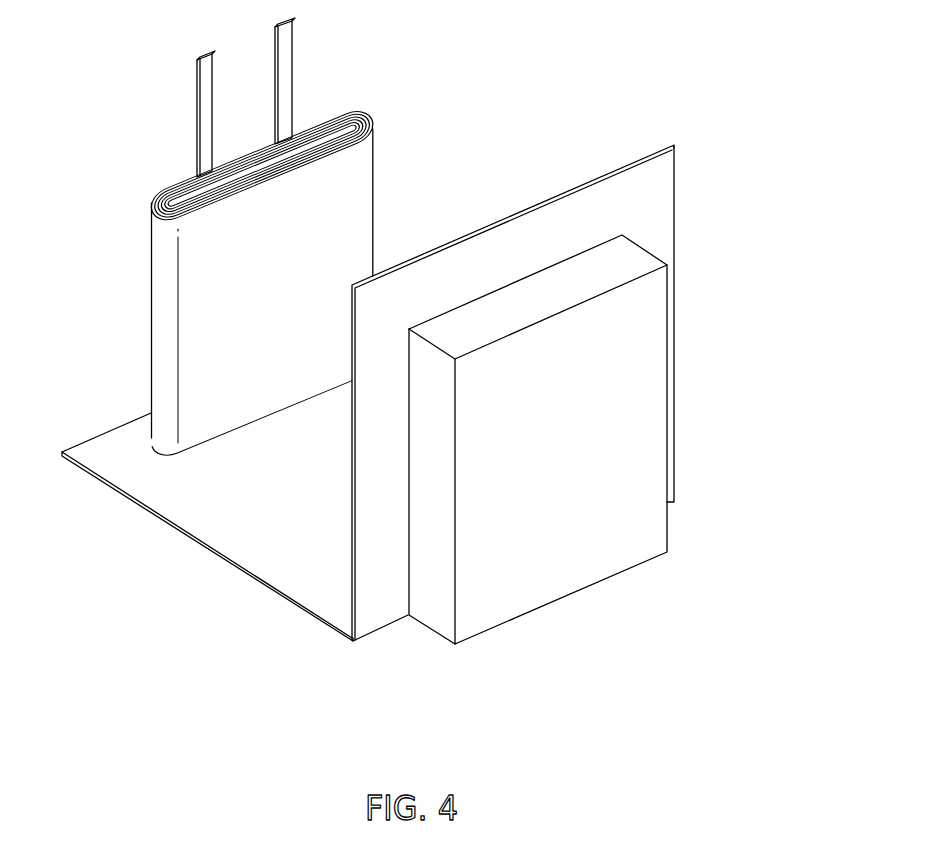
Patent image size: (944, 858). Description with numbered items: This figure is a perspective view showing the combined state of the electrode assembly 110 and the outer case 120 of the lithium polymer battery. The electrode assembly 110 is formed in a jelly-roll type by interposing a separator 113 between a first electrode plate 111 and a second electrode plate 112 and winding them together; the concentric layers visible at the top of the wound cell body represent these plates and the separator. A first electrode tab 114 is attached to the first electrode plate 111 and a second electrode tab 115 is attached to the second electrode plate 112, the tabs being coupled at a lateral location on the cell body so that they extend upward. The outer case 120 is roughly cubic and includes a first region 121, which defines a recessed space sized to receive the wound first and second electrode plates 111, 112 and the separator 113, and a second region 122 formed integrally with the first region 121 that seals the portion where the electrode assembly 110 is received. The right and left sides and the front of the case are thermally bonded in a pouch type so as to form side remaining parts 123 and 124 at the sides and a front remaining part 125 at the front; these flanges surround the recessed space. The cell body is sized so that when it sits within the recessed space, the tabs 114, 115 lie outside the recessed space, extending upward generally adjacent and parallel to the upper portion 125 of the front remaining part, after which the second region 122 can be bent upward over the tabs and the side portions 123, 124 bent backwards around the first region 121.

The electrode assembly 110 is at (390, 136).
The first electrode plate 111 is at (152, 200).
The second electrode plate 112 is at (164, 188).
The separator 113 is at (178, 188).
The first electrode tab 114 is at (206, 77).
The second electrode tab 115 is at (285, 46).
The outer case 120 is at (697, 399).
The first region 121 is at (557, 565).
The second region 122 is at (242, 543).
The side remaining part 123 is at (372, 593).
The side remaining part 124 is at (652, 237).
The front remaining part 125 is at (545, 232).